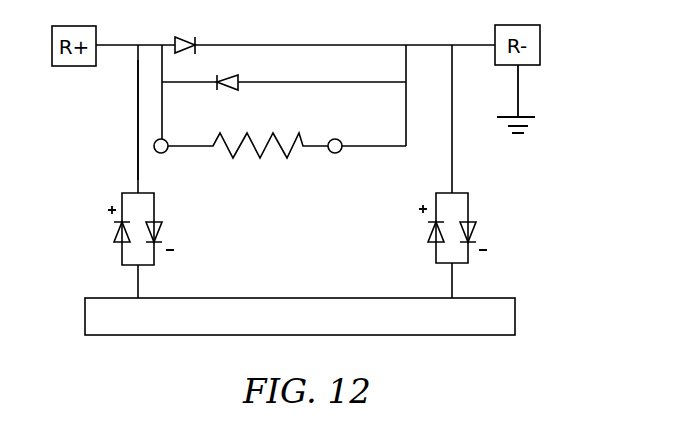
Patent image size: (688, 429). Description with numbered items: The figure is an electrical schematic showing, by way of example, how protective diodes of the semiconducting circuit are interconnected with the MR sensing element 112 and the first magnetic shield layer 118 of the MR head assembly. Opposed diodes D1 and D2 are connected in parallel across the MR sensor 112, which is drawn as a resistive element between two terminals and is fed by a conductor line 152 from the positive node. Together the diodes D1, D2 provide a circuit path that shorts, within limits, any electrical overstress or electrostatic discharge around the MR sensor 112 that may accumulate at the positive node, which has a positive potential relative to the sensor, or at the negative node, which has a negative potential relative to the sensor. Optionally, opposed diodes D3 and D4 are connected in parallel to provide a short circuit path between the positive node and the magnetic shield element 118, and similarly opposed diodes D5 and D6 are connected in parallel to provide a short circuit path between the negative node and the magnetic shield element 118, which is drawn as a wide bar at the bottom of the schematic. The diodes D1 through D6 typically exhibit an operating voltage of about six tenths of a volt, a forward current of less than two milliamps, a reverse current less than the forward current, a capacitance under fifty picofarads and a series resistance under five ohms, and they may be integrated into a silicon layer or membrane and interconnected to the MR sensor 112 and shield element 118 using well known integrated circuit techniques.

The conductor line 152 is at (138, 121).
The MR sensing element 112 is at (303, 139).
The first magnetic shield layer 118 is at (507, 318).
The diode D1 is at (184, 32).
The diode D2 is at (259, 93).
The diode D3 is at (103, 232).
The diode D4 is at (173, 232).
The diode D5 is at (417, 232).
The diode D6 is at (487, 232).